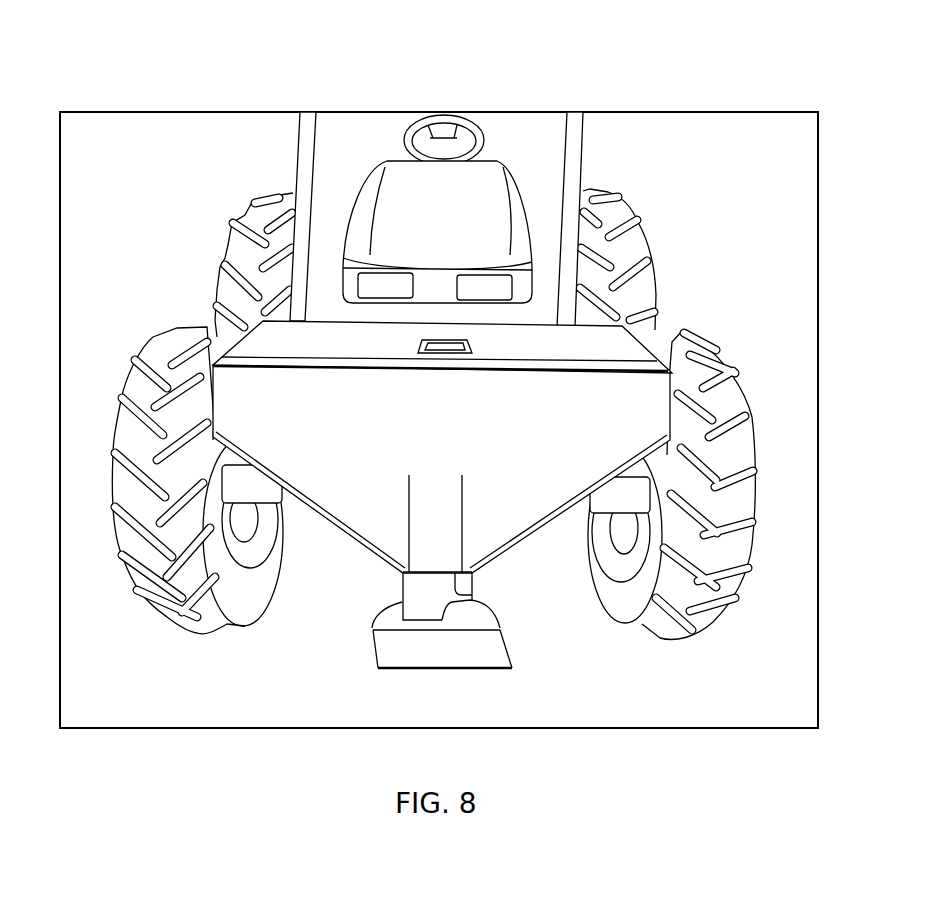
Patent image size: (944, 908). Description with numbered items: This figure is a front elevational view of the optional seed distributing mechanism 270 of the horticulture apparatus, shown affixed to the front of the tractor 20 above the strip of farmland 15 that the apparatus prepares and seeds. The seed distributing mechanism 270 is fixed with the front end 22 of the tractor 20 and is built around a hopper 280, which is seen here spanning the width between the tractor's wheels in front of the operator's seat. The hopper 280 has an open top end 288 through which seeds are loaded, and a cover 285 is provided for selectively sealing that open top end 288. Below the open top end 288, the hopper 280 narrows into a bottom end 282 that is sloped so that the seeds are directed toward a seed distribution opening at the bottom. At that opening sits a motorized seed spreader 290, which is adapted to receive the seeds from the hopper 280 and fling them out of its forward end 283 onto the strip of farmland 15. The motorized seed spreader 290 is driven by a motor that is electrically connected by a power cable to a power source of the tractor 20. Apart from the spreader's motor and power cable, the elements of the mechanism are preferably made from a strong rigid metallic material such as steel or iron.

The tractor 20 is at (480, 203).
The front end 22 is at (515, 268).
The seed distributing mechanism 270 is at (468, 455).
The hopper 280 is at (650, 401).
The cover 285 is at (263, 345).
The open top end 288 is at (222, 357).
The bottom end 282 is at (433, 538).
The forward end 283 is at (342, 635).
The motorized seed spreader 290 is at (466, 582).
The strip of farmland 15 is at (623, 705).